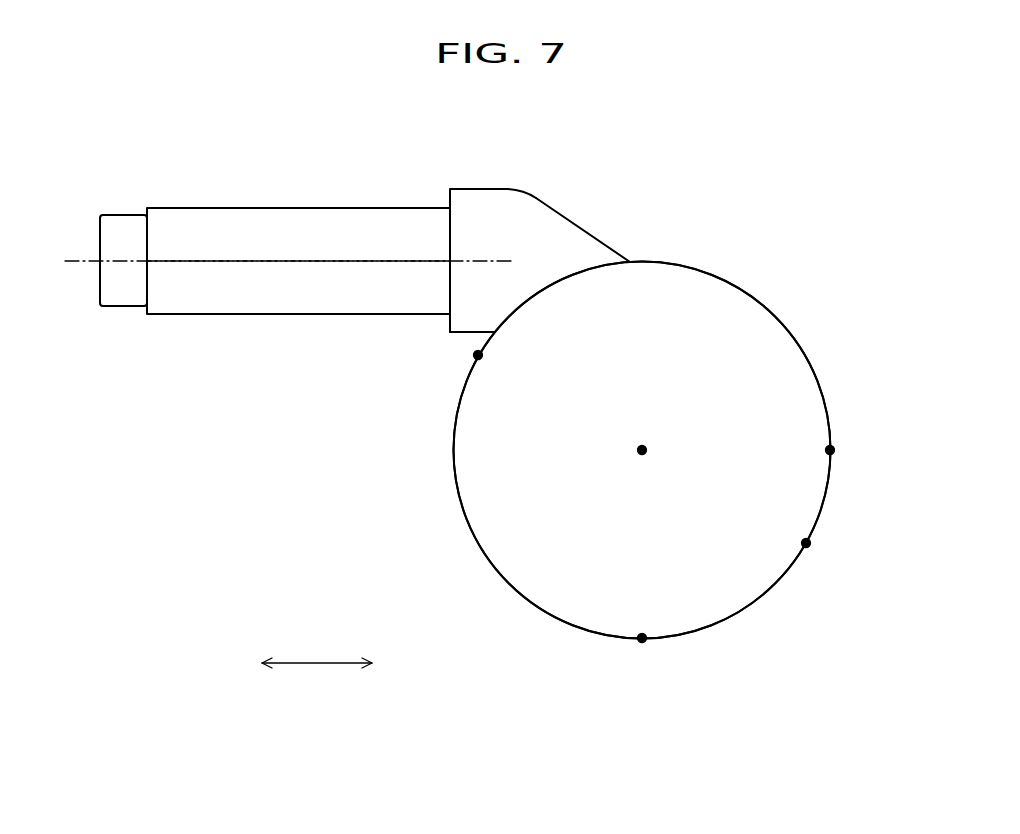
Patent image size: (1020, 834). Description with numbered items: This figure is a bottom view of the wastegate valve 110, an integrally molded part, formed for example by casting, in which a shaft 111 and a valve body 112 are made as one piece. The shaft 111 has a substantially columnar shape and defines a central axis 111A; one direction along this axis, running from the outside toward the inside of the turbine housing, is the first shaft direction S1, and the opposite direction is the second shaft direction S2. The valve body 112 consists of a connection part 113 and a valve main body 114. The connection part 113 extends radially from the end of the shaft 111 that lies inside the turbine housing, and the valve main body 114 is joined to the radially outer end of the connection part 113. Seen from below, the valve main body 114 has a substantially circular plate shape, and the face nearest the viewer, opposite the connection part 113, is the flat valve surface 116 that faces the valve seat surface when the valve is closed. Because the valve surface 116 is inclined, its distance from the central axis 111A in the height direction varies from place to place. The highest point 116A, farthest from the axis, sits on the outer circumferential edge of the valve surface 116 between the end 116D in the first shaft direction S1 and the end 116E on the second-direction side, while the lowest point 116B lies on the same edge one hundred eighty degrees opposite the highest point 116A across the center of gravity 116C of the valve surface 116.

The wastegate valve 110 is at (127, 366).
The shaft 111 is at (223, 314).
The central axis 111A is at (178, 261).
The valve body 112 is at (540, 202).
The connection part 113 is at (572, 221).
The valve main body 114 is at (822, 384).
The valve surface 116 is at (718, 299).
The highest point 116A is at (810, 547).
The lowest point 116B is at (476, 356).
The center of gravity 116C is at (641, 456).
The end of the valve surface in the first shaft direction 116D is at (835, 450).
The end of the valve surface on the second-direction side 116E is at (642, 644).
The first shaft direction S1 is at (337, 664).
The second shaft direction S2 is at (247, 664).